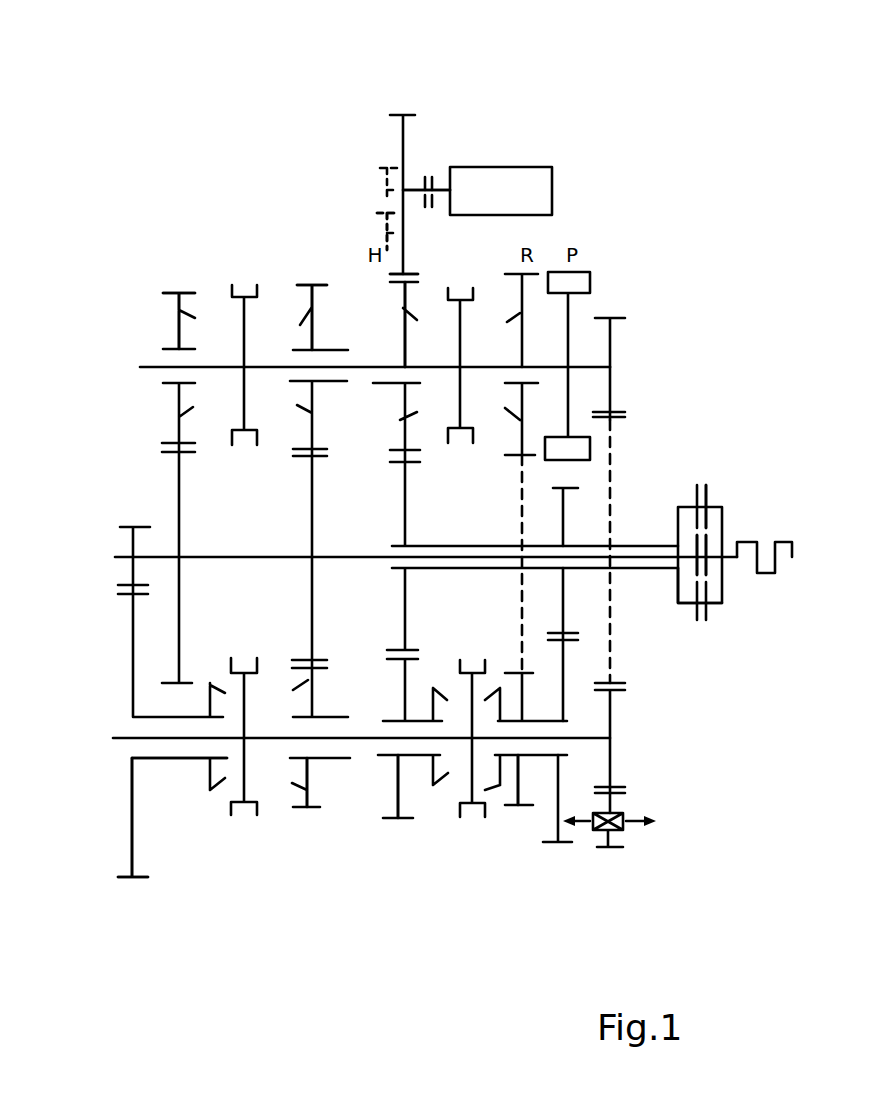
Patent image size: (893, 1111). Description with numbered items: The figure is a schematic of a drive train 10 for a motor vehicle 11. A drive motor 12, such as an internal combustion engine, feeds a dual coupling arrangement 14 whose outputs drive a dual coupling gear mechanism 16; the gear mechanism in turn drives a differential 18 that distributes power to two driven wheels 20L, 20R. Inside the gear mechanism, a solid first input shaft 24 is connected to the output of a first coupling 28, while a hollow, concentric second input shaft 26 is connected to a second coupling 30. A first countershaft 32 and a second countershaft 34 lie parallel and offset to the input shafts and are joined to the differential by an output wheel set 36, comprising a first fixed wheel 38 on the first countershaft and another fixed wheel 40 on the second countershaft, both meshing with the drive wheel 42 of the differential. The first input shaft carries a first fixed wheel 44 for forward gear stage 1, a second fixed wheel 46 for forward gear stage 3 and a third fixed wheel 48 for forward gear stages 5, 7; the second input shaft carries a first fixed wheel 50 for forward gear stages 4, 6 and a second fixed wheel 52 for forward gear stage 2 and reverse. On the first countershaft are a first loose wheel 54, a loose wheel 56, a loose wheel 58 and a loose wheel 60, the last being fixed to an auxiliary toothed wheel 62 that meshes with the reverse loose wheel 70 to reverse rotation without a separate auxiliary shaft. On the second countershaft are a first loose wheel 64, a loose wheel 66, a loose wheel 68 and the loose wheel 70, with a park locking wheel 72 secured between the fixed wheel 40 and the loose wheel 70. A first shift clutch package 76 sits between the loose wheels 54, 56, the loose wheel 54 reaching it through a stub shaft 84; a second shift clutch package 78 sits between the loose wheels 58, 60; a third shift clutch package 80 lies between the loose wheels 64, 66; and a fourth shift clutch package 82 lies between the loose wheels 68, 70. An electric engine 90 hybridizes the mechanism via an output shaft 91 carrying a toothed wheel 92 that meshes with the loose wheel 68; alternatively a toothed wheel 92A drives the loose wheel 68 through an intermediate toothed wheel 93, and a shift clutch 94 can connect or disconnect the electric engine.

The drive train 10 is at (668, 176).
The motor vehicle 11 is at (707, 230).
The dual coupling gear mechanism 16 is at (668, 318).
The drive motor 12 is at (763, 574).
The dual coupling arrangement 14 is at (705, 468).
The differential 18 is at (625, 832).
The driven wheel 20L is at (587, 824).
The driven wheel 20R is at (633, 829).
The first input shaft 24 is at (641, 558).
The second input shaft 26 is at (651, 569).
The first coupling 28 is at (707, 548).
The second coupling 30 is at (710, 495).
The first countershaft 32 is at (130, 733).
The second countershaft 34 is at (160, 362).
The output wheel set 36 is at (613, 290).
The first fixed wheel 38 is at (618, 713).
The fixed wheel 40 is at (618, 347).
The drive wheel 42 is at (615, 803).
The first fixed wheel 44 is at (128, 540).
The second fixed wheel 46 is at (175, 478).
The third fixed wheel 48 is at (310, 525).
The first fixed wheel 50 is at (405, 590).
The second fixed wheel 52 is at (563, 592).
The first loose wheel 54 is at (130, 808).
The loose wheel 56 is at (320, 786).
The loose wheel 58 is at (398, 793).
The loose wheel 60 is at (555, 822).
The auxiliary toothed wheel 62 is at (510, 808).
The first loose wheel 64 is at (175, 315).
The loose wheel 66 is at (300, 300).
The loose wheel 68 is at (400, 330).
The loose wheel 70 is at (520, 297).
The park locking wheel 72 is at (573, 318).
The first shift clutch package 76 is at (236, 838).
The second shift clutch package 78 is at (457, 852).
The third shift clutch package 80 is at (229, 250).
The fourth shift clutch package 82 is at (459, 258).
The stub shaft 84 is at (175, 762).
The electric engine 90 is at (525, 180).
The output shaft 91 is at (413, 192).
The toothed wheel 92 is at (403, 150).
The toothed wheel 92A is at (387, 180).
The intermediate toothed wheel 93 is at (385, 233).
The shift clutch 94 is at (432, 190).
The forward gear stage 1 is at (133, 832).
The forward gear stage 2 is at (540, 814).
The forward gear stage 3 is at (179, 296).
The forward gear stage 4 is at (408, 305).
The forward gear stage 5 is at (312, 296).
The forward gear stage 6 is at (400, 801).
The forward gear stage 7 is at (305, 802).